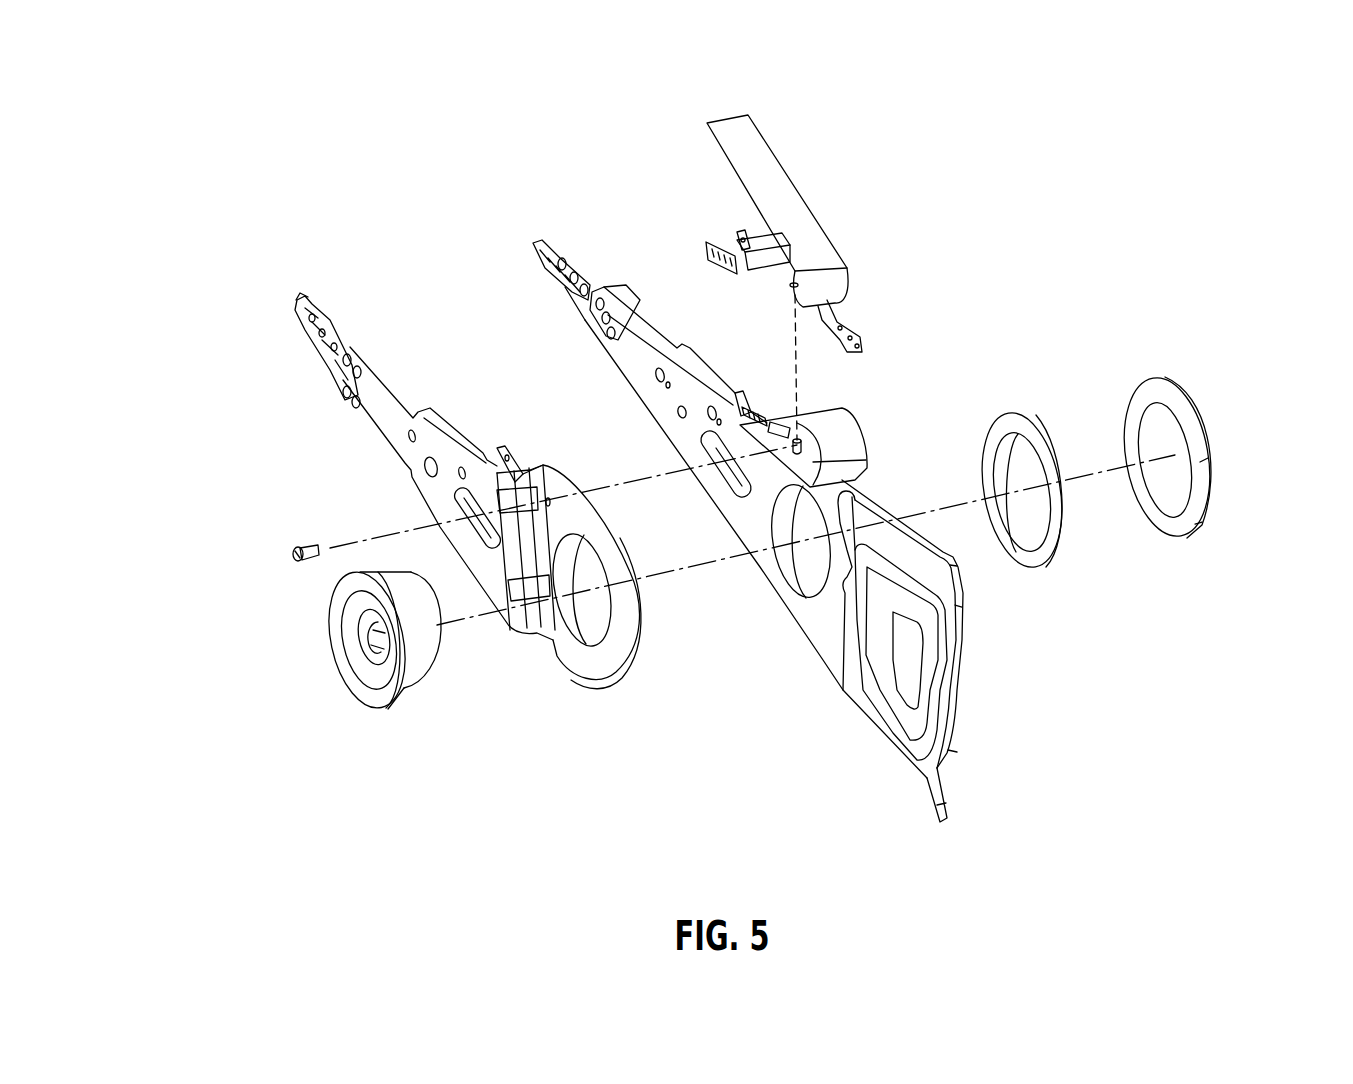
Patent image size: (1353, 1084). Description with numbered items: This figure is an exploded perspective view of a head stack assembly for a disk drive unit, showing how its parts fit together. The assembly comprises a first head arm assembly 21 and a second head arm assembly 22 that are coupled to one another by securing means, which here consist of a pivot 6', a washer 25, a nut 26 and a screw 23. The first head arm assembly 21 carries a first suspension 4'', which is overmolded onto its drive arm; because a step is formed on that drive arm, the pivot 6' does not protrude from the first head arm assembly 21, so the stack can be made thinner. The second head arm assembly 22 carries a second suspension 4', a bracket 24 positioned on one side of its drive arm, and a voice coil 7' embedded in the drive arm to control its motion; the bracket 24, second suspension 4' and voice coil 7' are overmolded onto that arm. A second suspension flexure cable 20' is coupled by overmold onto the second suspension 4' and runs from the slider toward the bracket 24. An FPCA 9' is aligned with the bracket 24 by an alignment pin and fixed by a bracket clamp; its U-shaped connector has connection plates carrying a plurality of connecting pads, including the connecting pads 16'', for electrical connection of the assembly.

The second suspension 4' is at (495, 217).
The first suspension 4'' is at (296, 284).
The FPCA 9' is at (849, 267).
The connecting pads 16'' is at (695, 257).
The second suspension flexure cable 20' is at (642, 369).
The first head arm assembly 21 is at (582, 653).
The second head arm assembly 22 is at (812, 617).
The screw 23 is at (308, 557).
The bracket 24 is at (853, 442).
The washer 25 is at (1030, 430).
The nut 26 is at (1195, 430).
The pivot 6' is at (379, 724).
The voice coil 7' is at (1010, 682).